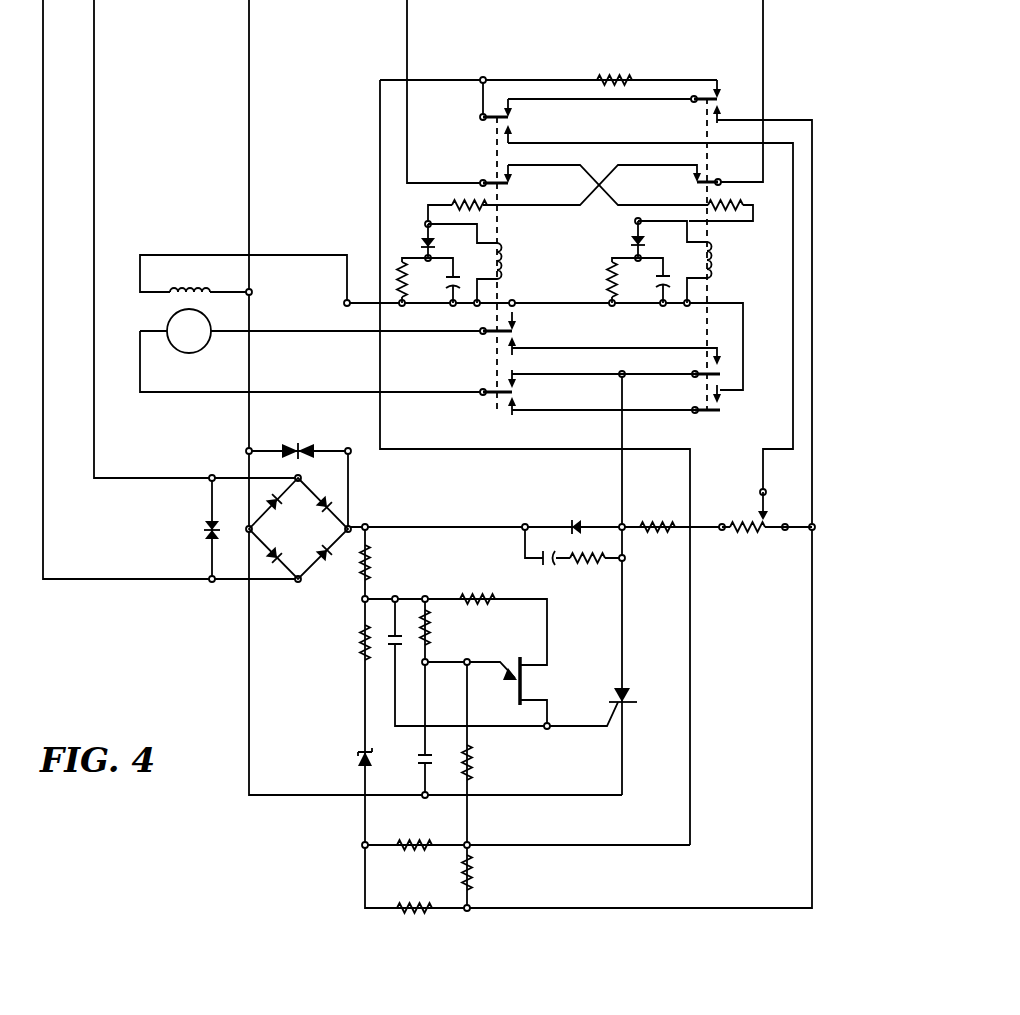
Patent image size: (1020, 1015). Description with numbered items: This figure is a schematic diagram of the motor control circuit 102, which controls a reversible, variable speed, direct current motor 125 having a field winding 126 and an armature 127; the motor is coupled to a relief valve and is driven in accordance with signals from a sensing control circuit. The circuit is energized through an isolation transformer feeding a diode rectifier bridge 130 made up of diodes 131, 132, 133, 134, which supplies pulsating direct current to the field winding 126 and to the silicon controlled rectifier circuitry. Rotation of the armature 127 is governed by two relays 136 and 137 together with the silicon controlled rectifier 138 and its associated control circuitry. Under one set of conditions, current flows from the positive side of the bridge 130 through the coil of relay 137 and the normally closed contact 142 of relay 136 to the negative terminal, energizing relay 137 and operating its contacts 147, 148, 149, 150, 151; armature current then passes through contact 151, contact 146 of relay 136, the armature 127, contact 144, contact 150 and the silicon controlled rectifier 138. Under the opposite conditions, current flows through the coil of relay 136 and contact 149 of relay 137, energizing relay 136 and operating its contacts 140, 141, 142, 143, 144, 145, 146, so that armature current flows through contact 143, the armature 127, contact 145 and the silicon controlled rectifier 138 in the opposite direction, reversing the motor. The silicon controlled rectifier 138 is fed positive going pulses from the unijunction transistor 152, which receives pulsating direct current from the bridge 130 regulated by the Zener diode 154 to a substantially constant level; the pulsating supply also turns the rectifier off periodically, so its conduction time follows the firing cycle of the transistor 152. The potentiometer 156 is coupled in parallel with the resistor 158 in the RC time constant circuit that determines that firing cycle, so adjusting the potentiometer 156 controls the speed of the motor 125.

The motor control circuit 102 is at (425, 456).
The motor 125 is at (166, 318).
The field winding 126 is at (187, 290).
The armature 127 is at (190, 348).
The diode rectifier bridge 130 is at (311, 528).
The diode 131 is at (267, 494).
The diode 132 is at (272, 562).
The diode 133 is at (336, 499).
The diode 134 is at (328, 563).
The relay 136 is at (502, 263).
The relay 137 is at (712, 260).
The silicon controlled rectifier 138 is at (632, 695).
The contact 140 is at (513, 110).
The contact 141 is at (514, 130).
The normally closed contact 142 is at (513, 178).
The contact 143 is at (516, 322).
The contact 144 is at (517, 342).
The contact 145 is at (518, 384).
The contact 146 is at (518, 400).
The contact 147 is at (720, 95).
The contact 148 is at (722, 108).
The contact 149 is at (690, 178).
The contact 150 is at (706, 364).
The contact 151 is at (706, 400).
The unijunction transistor 152 is at (553, 676).
The Zener diode 154 is at (352, 755).
The potentiometer 156 is at (773, 557).
The resistor 158 is at (476, 878).